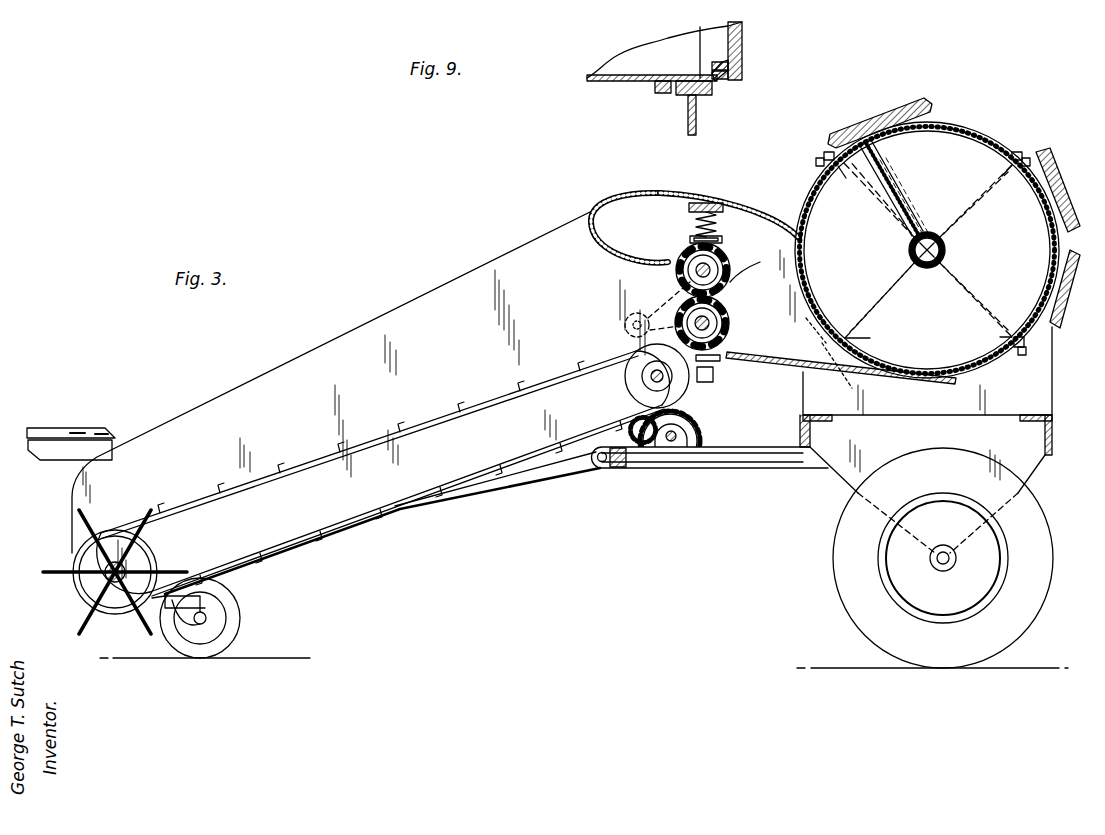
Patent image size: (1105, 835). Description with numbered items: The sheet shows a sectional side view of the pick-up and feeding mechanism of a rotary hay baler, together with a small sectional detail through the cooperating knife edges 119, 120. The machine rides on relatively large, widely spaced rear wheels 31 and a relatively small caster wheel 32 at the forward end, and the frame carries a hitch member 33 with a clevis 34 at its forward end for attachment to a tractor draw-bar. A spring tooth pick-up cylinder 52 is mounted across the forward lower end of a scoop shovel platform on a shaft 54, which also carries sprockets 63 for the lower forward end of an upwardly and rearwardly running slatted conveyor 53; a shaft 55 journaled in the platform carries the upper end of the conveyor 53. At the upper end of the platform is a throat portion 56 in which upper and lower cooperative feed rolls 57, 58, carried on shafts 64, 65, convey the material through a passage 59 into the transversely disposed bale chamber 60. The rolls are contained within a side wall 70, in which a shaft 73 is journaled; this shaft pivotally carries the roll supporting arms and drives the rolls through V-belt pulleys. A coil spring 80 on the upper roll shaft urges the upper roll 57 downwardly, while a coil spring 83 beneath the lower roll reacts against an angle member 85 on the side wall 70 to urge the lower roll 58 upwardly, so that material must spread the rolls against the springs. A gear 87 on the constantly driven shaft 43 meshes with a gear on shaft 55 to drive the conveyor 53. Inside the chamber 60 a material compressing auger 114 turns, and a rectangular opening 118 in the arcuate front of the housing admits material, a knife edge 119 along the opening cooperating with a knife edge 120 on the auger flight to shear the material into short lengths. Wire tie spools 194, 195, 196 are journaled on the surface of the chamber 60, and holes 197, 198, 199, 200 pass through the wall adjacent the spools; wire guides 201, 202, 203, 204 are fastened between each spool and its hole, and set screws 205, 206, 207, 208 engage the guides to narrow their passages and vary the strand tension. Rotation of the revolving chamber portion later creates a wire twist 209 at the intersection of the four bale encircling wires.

In FIG. 3, the rear wheels 31 is at (936, 660).
In FIG. 3, the caster wheel 32 is at (200, 655).
In FIG. 3, the hitch member 33 is at (112, 448).
In FIG. 3, the clevis 34 is at (46, 427).
In FIG. 3, the constantly driven shaft 43 is at (672, 444).
In FIG. 3, the spring tooth pick-up cylinder 52 is at (55, 563).
In FIG. 3, the slatted conveyor 53 is at (445, 412).
In FIG. 3, the shaft 54 is at (116, 560).
In FIG. 3, the shaft 55 is at (652, 380).
In FIG. 3, the throat portion 56 is at (612, 245).
In FIG. 3, the upper feed roll 57 is at (722, 262).
In FIG. 3, the lower feed roll 58 is at (724, 330).
In FIG. 3, the passage 59 is at (800, 288).
In FIG. 9, the bale chamber 60 is at (616, 84).
In FIG. 3, the bale chamber 60 is at (948, 122).
In FIG. 3, the sprockets 63 is at (134, 558).
In FIG. 3, the shaft 64 is at (698, 266).
In FIG. 3, the shaft 65 is at (718, 316).
In FIG. 9, the side wall 70 is at (688, 117).
In FIG. 3, the shaft 73 is at (624, 325).
In FIG. 3, the coil spring 80 is at (722, 203).
In FIG. 3, the coil spring 83 is at (722, 366).
In FIG. 3, the angle member 85 is at (706, 385).
In FIG. 3, the gear 87 is at (650, 446).
In FIG. 9, the material compressing auger 114 is at (746, 33).
In FIG. 3, the rectangularly shaped opening 118 is at (812, 330).
In FIG. 9, the knife edge 119 is at (706, 82).
In FIG. 3, the knife edge 119 is at (800, 270).
In FIG. 9, the knife edge 120 is at (728, 64).
In FIG. 3, the spool 194 is at (880, 126).
In FIG. 3, the spool 195 is at (1062, 170).
In FIG. 3, the spool 196 is at (1052, 300).
In FIG. 3, the hole 197 is at (840, 178).
In FIG. 3, the hole 198 is at (1010, 166).
In FIG. 3, the hole 199 is at (1000, 339).
In FIG. 3, the hole 200 is at (870, 340).
In FIG. 3, the wire guide 201 is at (824, 156).
In FIG. 3, the wire guide 202 is at (1028, 158).
In FIG. 3, the wire guide 203 is at (1022, 348).
In FIG. 3, the wire guide 204 is at (846, 375).
In FIG. 3, the set screw 205 is at (816, 162).
In FIG. 3, the set screw 206 is at (1017, 152).
In FIG. 3, the set screw 207 is at (1022, 356).
In FIG. 3, the set screw 208 is at (812, 340).
In FIG. 3, the wire twist 209 is at (946, 251).